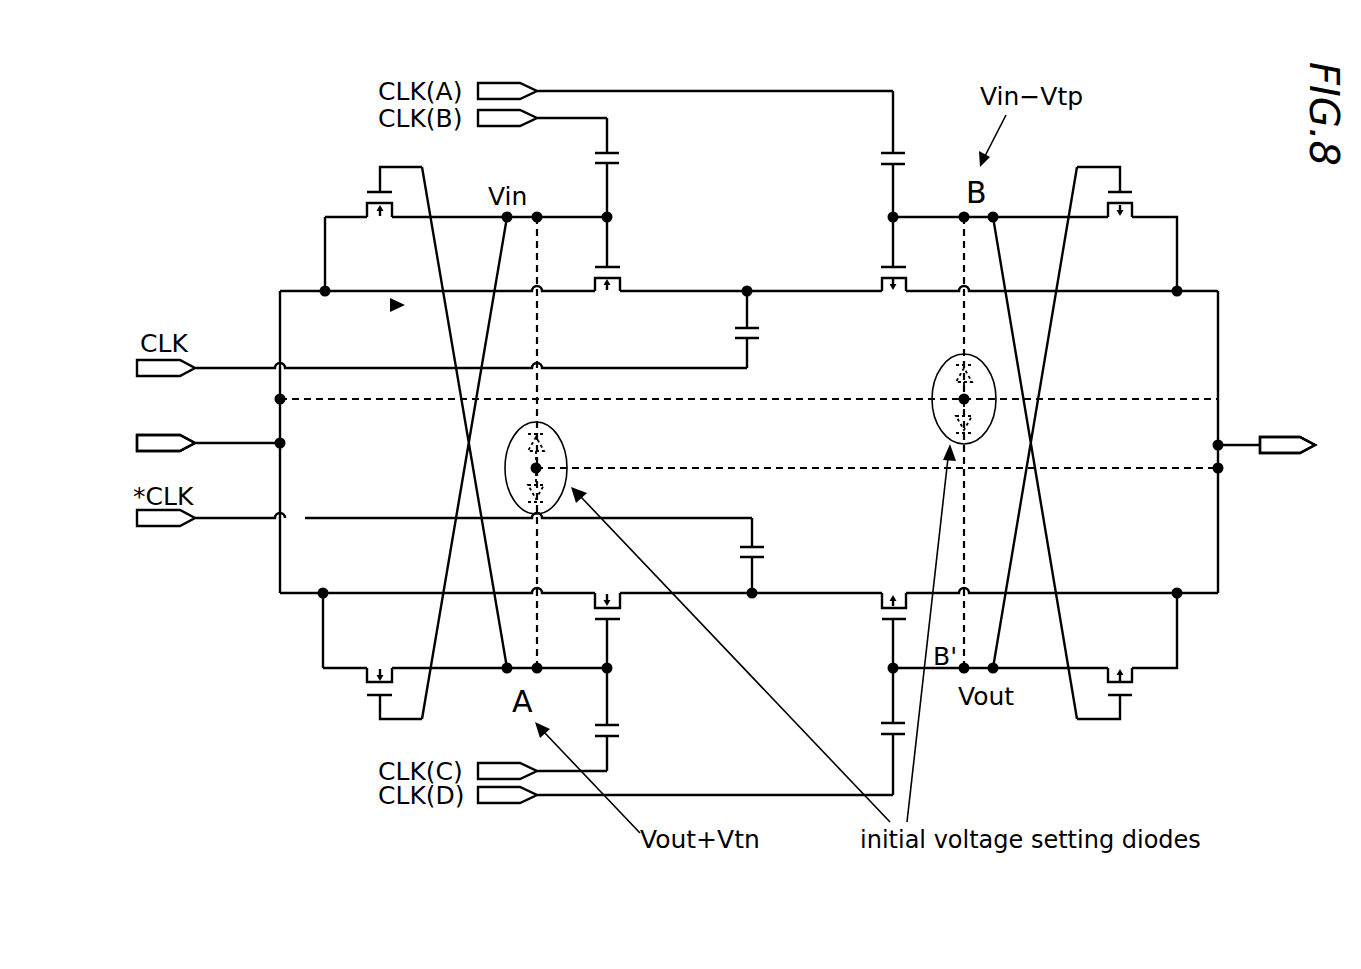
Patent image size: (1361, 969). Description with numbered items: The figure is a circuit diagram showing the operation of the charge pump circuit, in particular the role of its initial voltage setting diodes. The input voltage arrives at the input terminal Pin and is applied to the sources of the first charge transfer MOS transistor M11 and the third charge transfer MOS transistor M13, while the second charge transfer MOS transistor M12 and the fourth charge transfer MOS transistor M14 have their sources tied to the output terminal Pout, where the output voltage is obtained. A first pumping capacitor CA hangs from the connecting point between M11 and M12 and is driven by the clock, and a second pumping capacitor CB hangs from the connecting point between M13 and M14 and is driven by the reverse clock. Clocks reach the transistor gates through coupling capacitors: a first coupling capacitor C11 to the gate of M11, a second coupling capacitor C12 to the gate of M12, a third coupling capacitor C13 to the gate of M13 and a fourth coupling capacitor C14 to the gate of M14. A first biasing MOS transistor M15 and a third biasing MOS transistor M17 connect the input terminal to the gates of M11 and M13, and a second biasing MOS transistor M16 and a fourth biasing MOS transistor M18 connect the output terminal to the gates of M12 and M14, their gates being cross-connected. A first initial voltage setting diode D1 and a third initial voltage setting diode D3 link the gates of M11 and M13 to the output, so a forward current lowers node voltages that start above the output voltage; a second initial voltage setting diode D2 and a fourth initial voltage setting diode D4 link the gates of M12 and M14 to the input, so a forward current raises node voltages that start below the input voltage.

The first charge transfer MOS transistor M11 is at (615, 262).
The second charge transfer MOS transistor M12 is at (884, 262).
The third charge transfer MOS transistor M13 is at (615, 632).
The fourth charge transfer MOS transistor M14 is at (884, 630).
The first biasing MOS transistor M15 is at (371, 185).
The second biasing MOS transistor M16 is at (1125, 188).
The third biasing MOS transistor M17 is at (372, 703).
The fourth biasing MOS transistor M18 is at (1125, 703).
The first coupling capacitor C11 is at (634, 167).
The second coupling capacitor C12 is at (864, 154).
The third coupling capacitor C13 is at (636, 719).
The fourth coupling capacitor C14 is at (864, 731).
The first pumping capacitor CA is at (769, 329).
The second pumping capacitor CB is at (772, 555).
The first initial voltage setting diode D1 is at (555, 452).
The second initial voltage setting diode D2 is at (946, 385).
The third initial voltage setting diode D3 is at (552, 492).
The fourth initial voltage setting diode D4 is at (946, 420).
The input terminal Pin is at (195, 440).
The output terminal Pout is at (1283, 455).